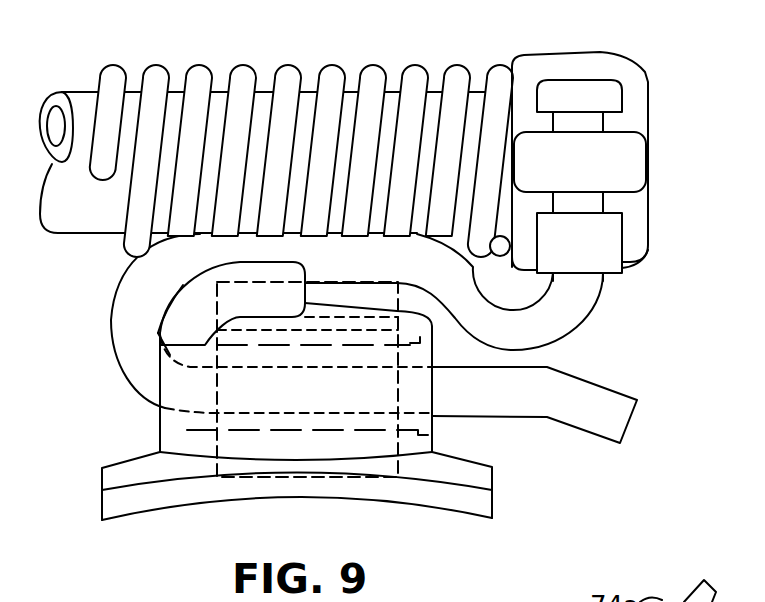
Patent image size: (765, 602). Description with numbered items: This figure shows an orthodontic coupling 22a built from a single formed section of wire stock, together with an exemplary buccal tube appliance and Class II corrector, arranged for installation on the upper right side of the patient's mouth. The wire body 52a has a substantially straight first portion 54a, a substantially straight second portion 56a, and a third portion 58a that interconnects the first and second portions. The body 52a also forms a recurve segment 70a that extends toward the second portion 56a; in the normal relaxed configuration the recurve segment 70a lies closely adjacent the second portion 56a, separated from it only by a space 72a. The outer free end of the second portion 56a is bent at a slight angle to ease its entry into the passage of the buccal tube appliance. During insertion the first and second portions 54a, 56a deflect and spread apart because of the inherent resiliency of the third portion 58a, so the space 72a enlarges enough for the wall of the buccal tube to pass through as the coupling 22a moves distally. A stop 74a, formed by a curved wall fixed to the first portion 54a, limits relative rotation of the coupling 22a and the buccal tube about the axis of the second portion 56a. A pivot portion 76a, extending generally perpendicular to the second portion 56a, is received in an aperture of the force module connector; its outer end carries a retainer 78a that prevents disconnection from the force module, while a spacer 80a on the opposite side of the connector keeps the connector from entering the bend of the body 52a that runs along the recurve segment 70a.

The orthodontic coupling 22a is at (388, 338).
The body 52a is at (270, 415).
The first portion 54a is at (323, 257).
The second portion 56a is at (300, 397).
The third portion 58a is at (125, 327).
The recurve segment 70a is at (372, 334).
The space 72a is at (533, 360).
The stop 74a is at (352, 447).
The pivot portion 76a is at (634, 166).
The retainer 78a is at (610, 95).
The spacer 80a is at (622, 260).